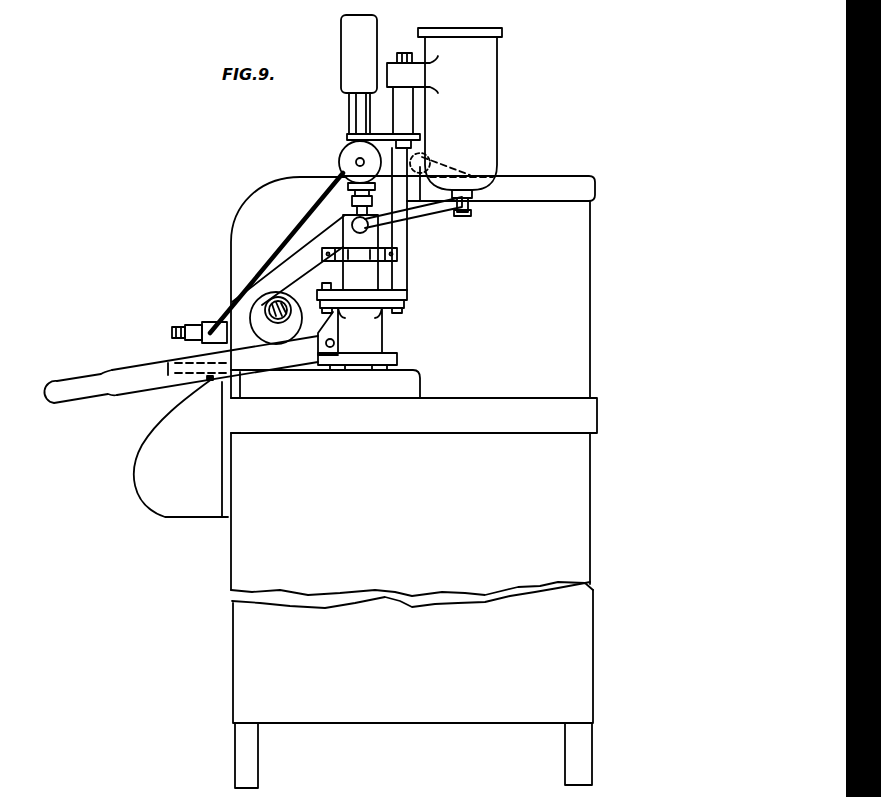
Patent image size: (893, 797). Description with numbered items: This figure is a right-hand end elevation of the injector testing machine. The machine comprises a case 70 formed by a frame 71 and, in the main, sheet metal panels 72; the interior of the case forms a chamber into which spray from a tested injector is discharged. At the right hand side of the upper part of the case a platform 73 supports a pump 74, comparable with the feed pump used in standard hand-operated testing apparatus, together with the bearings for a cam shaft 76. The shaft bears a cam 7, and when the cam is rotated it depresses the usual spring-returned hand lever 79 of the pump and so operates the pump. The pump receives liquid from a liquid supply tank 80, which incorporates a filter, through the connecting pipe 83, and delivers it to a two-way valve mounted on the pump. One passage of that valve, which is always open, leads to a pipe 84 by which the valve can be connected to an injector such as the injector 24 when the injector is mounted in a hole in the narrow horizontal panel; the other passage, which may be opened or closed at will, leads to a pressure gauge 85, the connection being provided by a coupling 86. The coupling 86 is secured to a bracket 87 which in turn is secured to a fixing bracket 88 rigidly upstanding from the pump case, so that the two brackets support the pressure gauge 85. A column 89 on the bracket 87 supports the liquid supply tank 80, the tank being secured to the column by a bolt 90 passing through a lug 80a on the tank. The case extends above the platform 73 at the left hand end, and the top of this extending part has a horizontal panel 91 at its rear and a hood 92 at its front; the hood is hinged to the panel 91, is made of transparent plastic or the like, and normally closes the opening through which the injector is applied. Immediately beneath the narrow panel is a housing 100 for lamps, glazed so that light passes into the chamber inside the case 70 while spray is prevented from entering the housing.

The cam 7 is at (270, 335).
The injector 24 is at (215, 325).
The case 70 is at (230, 555).
The frame 71 is at (250, 576).
The sheet metal panels 72 is at (272, 677).
The platform 73 is at (533, 407).
The pump 74 is at (362, 278).
The cam shaft 76 is at (268, 303).
The hand lever 79 is at (287, 355).
The liquid supply tank 80 is at (482, 103).
The lug 80a is at (400, 77).
The connecting pipe 83 is at (423, 214).
The pipe 84 is at (284, 244).
The pressure gauge 85 is at (341, 32).
The coupling 86 is at (360, 106).
The bracket 87 is at (367, 131).
The fixing bracket 88 is at (400, 275).
The column 89 is at (403, 98).
The bolt 90 is at (402, 46).
The horizontal panel 91 is at (540, 177).
The hood 92 is at (267, 200).
The housing 100 is at (175, 498).